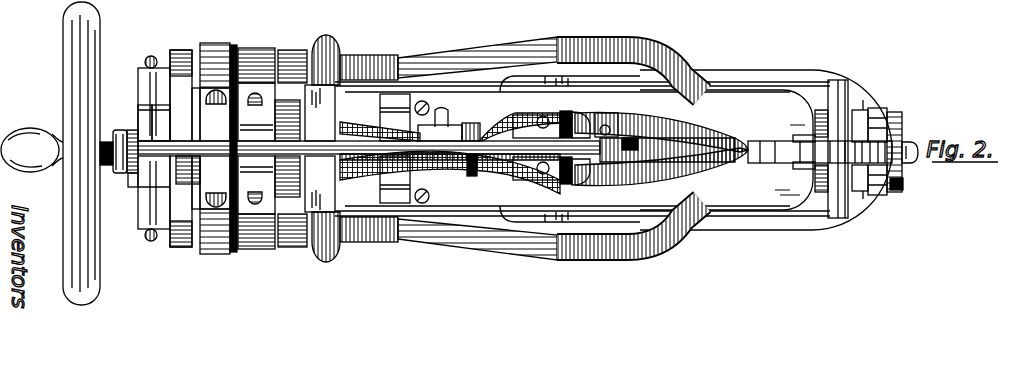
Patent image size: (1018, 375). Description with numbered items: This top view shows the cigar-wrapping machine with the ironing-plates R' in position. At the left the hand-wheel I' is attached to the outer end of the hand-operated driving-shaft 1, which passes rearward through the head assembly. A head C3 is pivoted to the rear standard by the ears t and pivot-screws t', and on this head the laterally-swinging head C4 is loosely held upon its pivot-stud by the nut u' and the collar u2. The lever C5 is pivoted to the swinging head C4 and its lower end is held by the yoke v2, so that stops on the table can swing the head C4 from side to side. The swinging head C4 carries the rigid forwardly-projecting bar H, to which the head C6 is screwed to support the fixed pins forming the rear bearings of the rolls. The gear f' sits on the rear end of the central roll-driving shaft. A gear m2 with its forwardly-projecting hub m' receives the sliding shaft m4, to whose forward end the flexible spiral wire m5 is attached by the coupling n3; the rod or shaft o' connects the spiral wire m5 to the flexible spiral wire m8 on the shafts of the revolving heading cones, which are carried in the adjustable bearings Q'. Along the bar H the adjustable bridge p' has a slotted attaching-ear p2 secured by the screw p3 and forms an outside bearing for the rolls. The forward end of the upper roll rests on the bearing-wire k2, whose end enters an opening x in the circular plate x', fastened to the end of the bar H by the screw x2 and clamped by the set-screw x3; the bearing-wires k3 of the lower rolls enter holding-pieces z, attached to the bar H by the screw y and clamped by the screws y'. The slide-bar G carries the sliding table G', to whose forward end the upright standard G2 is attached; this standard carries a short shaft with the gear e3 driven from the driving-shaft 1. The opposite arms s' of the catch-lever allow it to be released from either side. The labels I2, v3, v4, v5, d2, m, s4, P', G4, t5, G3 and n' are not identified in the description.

The hand-wheel I' is at (50, 153).
The hand-operated driving-shaft 1 is at (104, 179).
The nut u' is at (116, 148).
The collar u2 is at (122, 158).
The yoke v2 is at (130, 186).
The ears t is at (147, 148).
The pivot-screws t' is at (146, 150).
The sliding shaft m4 is at (178, 62).
The gear f' is at (187, 148).
The laterally-swinging head C4 is at (140, 115).
The head C3 is at (191, 148).
The housing block I2 is at (220, 48).
The gear v3 is at (218, 102).
The gear v4 is at (218, 180).
The hub m' is at (256, 152).
The gear m2 is at (258, 148).
The lever C5 is at (256, 112).
The head C6 is at (256, 185).
The gear v5 is at (252, 180).
The collar d2 is at (200, 162).
The coupling n3 is at (914, 113).
The arms s' is at (340, 152).
The bar H is at (369, 147).
The frame plate m is at (582, 152).
The adjustable bearings Q' is at (766, 150).
The sliding table G' is at (735, 150).
The flexible spiral wire m5 is at (376, 58).
The rod or shaft o' is at (477, 152).
The flexible spiral wire m8 is at (640, 52).
The block s4 is at (395, 115).
The slide-bar G is at (395, 153).
The screw p3 is at (448, 112).
The slotted attaching-ear p2 is at (470, 126).
The adjustable bridge p' is at (474, 173).
The screw y is at (450, 149).
The holding-pieces z is at (536, 147).
The screws y' is at (564, 150).
The bearing-wires k3 is at (581, 150).
The bearing-wire k2 is at (706, 132).
The set-screw x3 is at (605, 116).
The opening x is at (617, 107).
The circular plate x' is at (633, 107).
The screw x2 is at (615, 146).
The ironing-plates R' is at (665, 149).
The shaft P' is at (820, 152).
The plate G4 is at (838, 149).
The plate t5 is at (812, 136).
The block G3 is at (860, 149).
The upright standard G2 is at (877, 151).
The cap n' is at (911, 145).
The gear e3 is at (903, 180).